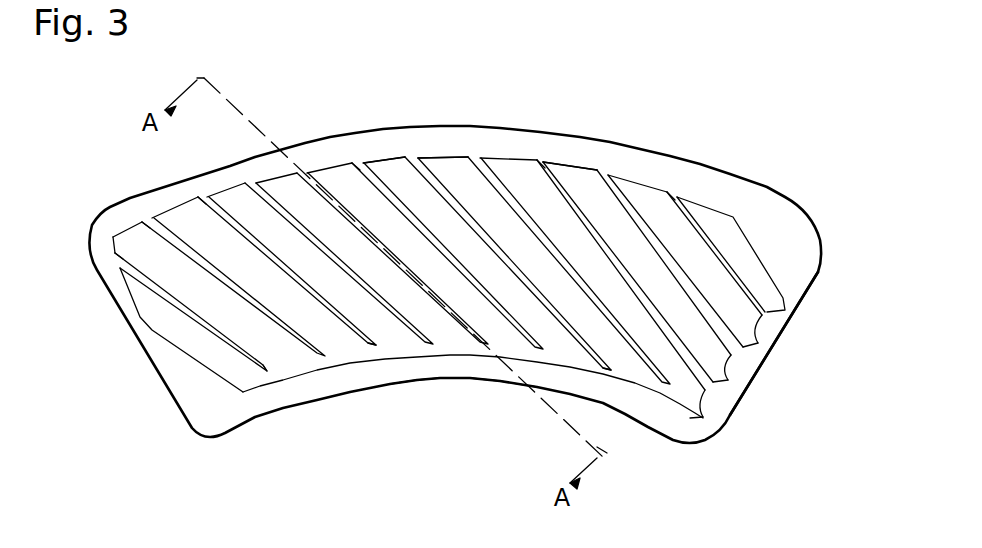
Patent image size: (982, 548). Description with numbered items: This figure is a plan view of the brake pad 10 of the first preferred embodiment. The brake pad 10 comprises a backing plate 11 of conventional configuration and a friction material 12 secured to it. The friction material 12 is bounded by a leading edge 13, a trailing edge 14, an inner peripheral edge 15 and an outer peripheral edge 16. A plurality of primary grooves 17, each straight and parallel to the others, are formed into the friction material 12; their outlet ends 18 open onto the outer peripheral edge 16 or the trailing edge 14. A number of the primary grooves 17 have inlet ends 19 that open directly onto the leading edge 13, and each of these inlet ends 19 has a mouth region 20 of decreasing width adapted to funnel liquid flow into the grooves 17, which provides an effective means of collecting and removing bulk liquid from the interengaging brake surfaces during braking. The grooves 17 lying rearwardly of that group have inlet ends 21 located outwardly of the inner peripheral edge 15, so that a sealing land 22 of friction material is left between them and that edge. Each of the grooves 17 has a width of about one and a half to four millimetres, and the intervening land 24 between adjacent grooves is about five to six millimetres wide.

The brake pad 10 is at (748, 163).
The backing plate 11 is at (635, 160).
The friction material 12 is at (582, 177).
The leading edge 13 is at (785, 345).
The trailing edge 14 is at (140, 313).
The inner peripheral edge 15 is at (418, 357).
The outer peripheral edge 16 is at (442, 157).
The primary grooves 17 is at (263, 312).
The outlet ends 18 is at (118, 263).
The inlet ends 19 is at (763, 317).
The mouth regions 20 is at (745, 347).
The inlet ends 21 is at (267, 372).
The sealing land 22 is at (457, 350).
The intervening land 24 is at (415, 197).